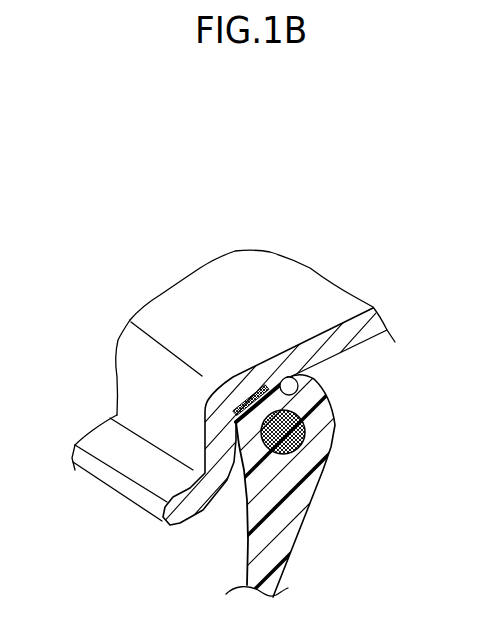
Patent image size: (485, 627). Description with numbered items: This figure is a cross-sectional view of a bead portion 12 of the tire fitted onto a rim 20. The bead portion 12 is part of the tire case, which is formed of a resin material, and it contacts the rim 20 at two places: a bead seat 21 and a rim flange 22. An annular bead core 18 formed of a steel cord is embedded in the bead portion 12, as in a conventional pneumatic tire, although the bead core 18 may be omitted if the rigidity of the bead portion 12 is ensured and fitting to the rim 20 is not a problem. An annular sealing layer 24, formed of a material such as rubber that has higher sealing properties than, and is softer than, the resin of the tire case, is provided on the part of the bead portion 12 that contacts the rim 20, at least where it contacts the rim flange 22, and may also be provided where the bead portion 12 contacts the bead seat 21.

The bead portion 12 is at (330, 455).
The bead core 18 is at (306, 432).
The rim 20 is at (252, 241).
The bead seat 21 is at (289, 377).
The rim flange 22 is at (152, 421).
The sealing layer 24 is at (208, 410).